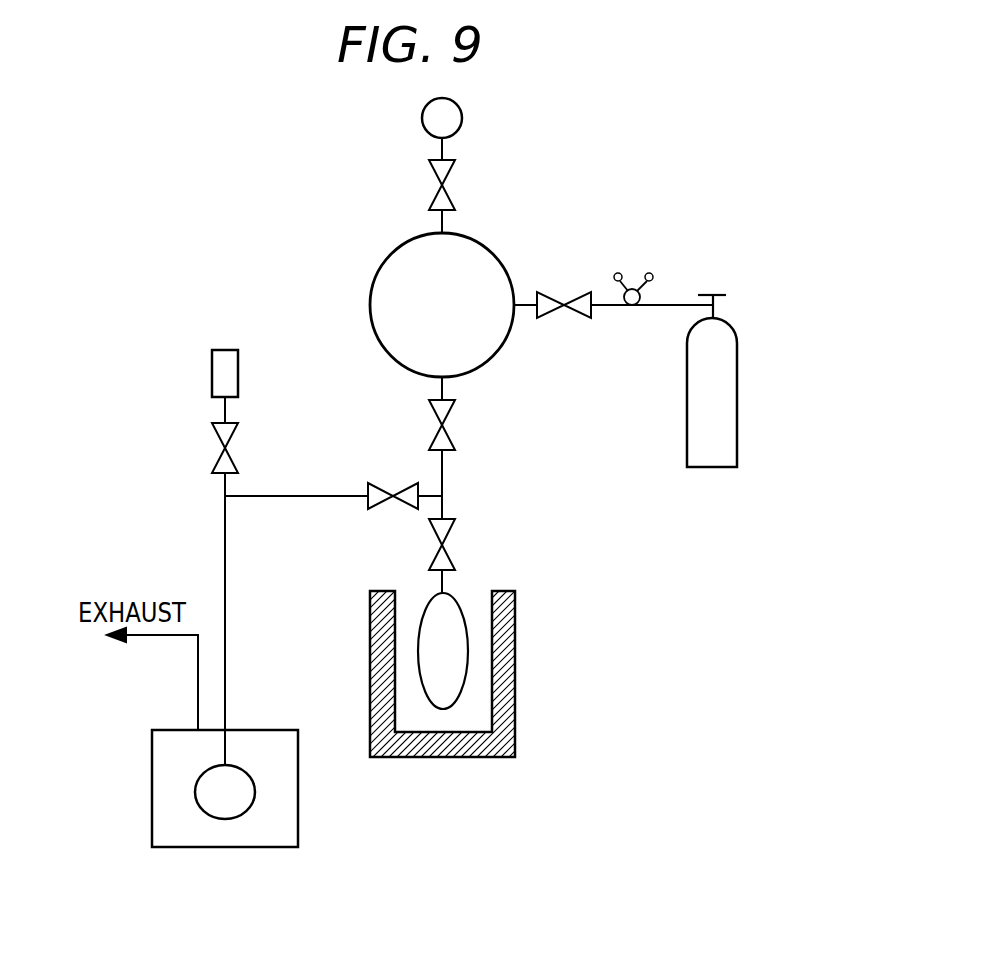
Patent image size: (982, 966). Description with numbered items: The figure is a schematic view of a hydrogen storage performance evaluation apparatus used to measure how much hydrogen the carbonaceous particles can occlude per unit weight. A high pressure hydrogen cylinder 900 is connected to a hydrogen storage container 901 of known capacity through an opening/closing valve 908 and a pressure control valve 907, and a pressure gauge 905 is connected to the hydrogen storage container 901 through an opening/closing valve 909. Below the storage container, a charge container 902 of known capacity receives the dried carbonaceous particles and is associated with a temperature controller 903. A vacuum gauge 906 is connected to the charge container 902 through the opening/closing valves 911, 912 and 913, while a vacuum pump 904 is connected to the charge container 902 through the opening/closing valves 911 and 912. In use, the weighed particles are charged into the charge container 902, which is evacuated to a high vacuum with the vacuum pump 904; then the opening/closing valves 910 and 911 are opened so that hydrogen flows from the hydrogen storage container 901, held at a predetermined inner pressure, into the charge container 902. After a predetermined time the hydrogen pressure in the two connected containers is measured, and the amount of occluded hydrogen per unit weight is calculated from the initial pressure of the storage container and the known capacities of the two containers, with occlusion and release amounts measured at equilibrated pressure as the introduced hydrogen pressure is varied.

The high pressure hydrogen cylinder 900 is at (708, 453).
The hydrogen storage container 901 is at (465, 258).
The charge container 902 is at (445, 696).
The temperature controller 903 is at (515, 650).
The vacuum pump 904 is at (165, 805).
The pressure gauge 905 is at (453, 116).
The vacuum gauge 906 is at (217, 373).
The pressure control valve 907 is at (640, 295).
The opening/closing valve 908 is at (548, 298).
The opening/closing valve 909 is at (437, 170).
The opening/closing valve 910 is at (449, 435).
The opening/closing valve 911 is at (449, 527).
The opening/closing valve 912 is at (381, 505).
The opening/closing valve 913 is at (228, 433).